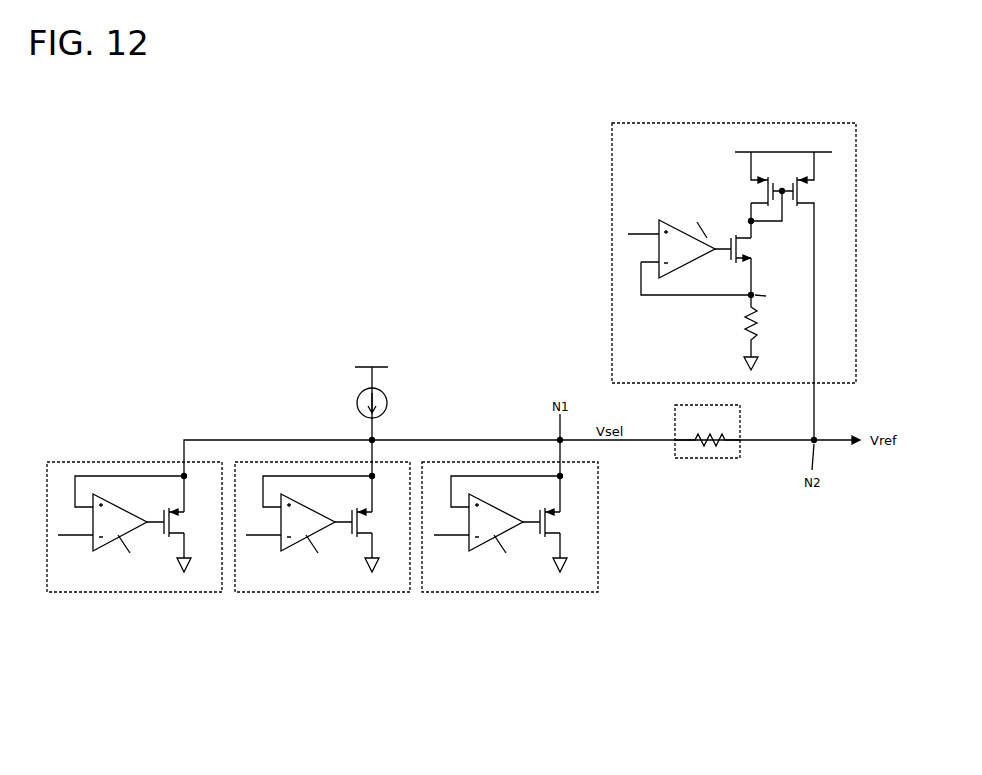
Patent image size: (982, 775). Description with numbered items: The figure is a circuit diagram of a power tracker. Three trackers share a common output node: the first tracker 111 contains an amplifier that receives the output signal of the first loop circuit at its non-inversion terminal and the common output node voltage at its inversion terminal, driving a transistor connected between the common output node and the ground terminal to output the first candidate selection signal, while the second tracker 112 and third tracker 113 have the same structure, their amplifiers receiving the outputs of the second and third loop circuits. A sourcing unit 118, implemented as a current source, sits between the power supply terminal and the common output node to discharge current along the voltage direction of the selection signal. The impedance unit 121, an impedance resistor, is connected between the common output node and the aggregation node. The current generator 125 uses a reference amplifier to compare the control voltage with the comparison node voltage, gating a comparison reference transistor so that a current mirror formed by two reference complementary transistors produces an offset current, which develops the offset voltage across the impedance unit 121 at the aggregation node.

The sourcing unit 118 is at (387, 403).
The impedance unit 121 is at (725, 460).
The first tracker 111 is at (190, 592).
The second tracker 112 is at (378, 592).
The third tracker 113 is at (566, 592).
The current generator 125 is at (830, 122).